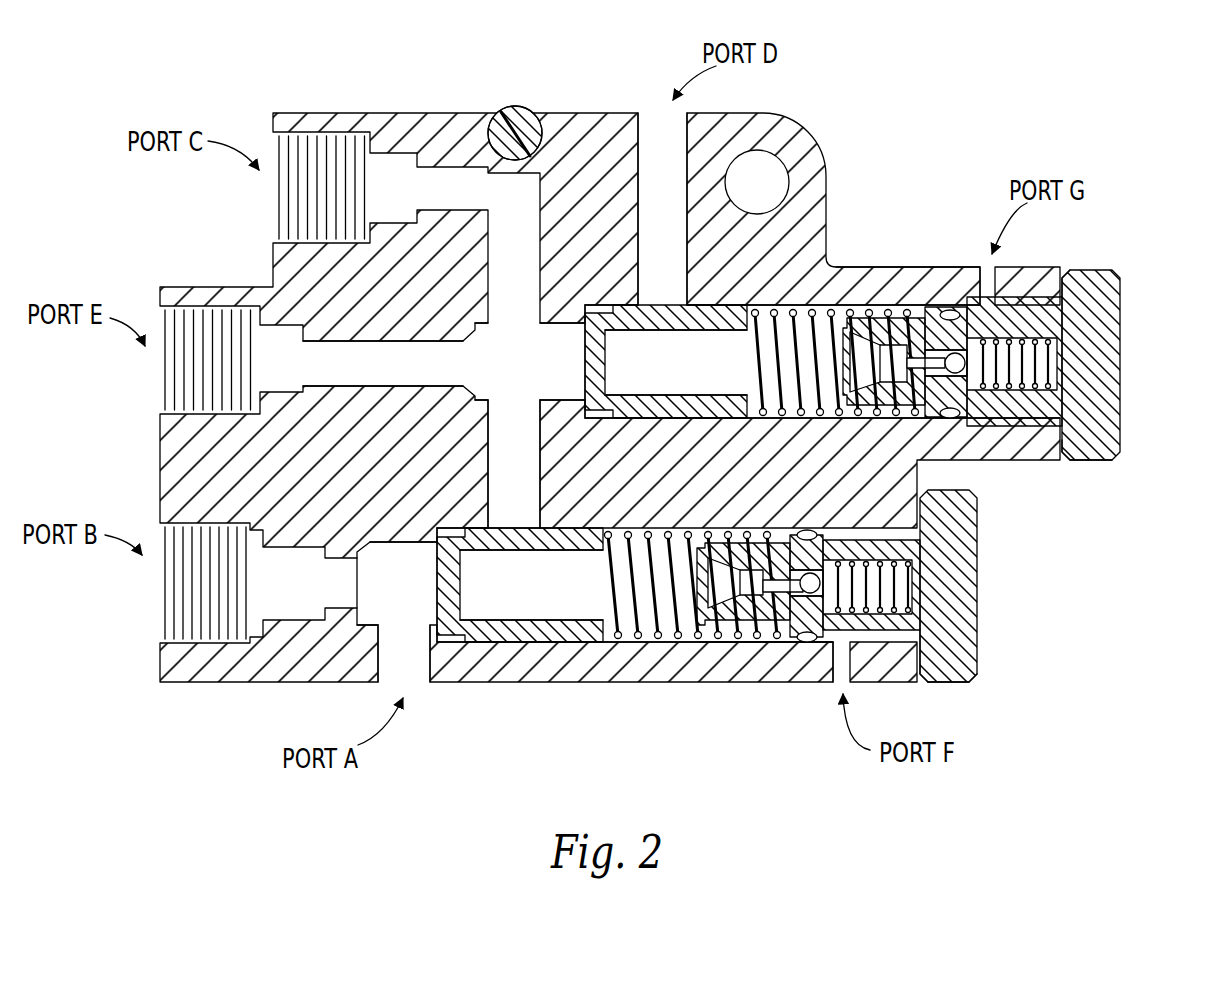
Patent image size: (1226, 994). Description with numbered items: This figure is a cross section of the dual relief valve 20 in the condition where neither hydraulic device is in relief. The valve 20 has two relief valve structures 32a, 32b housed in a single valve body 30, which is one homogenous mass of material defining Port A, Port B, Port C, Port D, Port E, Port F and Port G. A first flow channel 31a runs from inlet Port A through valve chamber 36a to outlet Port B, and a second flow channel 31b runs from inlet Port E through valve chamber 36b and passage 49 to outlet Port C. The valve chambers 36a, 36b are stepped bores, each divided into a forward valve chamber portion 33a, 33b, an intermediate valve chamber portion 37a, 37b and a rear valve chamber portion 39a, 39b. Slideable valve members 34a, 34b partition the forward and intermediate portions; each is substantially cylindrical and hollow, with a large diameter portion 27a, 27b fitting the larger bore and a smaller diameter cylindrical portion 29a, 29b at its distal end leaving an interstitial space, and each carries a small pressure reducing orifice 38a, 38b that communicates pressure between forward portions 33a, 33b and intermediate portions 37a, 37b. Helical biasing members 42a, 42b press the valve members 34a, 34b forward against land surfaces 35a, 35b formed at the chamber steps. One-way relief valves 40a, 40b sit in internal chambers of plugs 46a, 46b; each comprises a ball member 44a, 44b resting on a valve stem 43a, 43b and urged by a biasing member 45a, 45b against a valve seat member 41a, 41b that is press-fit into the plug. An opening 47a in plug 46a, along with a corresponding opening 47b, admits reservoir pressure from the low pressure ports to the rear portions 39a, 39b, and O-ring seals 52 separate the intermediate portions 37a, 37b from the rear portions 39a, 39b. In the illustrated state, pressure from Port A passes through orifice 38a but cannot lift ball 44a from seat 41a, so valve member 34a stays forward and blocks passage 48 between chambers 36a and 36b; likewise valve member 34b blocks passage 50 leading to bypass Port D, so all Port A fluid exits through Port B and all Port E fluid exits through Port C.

The valve 20 is at (335, 66).
The large diameter portion 27a is at (520, 650).
The large diameter portion 27b is at (778, 277).
The smaller diameter cylindrical portion 29a is at (445, 637).
The smaller diameter cylindrical portion 29b is at (603, 303).
The valve body 30 is at (285, 270).
The first flow channel 31a is at (288, 597).
The second flow channel 31b is at (457, 178).
The relief valve structure 32a is at (766, 674).
The relief valve structure 32b is at (886, 284).
The forward valve chamber portion 33a is at (412, 605).
The forward valve chamber portion 33b is at (550, 353).
The slideable valve member 34a is at (563, 524).
The slideable valve member 34b is at (683, 421).
The land surface 35a is at (450, 640).
The land surface 35b is at (607, 397).
The valve chamber 36a is at (393, 555).
The valve chamber 36b is at (490, 348).
The intermediate valve chamber portion 37a is at (645, 640).
The intermediate valve chamber portion 37b is at (787, 307).
The pressure reducing orifice 38a is at (470, 592).
The pressure reducing orifice 38b is at (577, 355).
The rear valve chamber portion 39a is at (912, 660).
The rear valve chamber portion 39b is at (975, 320).
The one-way relief valve 40a is at (880, 562).
The one-way relief valve 40b is at (1050, 397).
The valve seat member 41a is at (795, 645).
The valve seat member 41b is at (928, 320).
The biasing member 42a is at (707, 543).
The biasing member 42b is at (845, 328).
The valve stem 43a is at (975, 680).
The valve stem 43b is at (1070, 455).
The ball member 44a is at (812, 572).
The ball member 44b is at (955, 352).
The biasing member 45a is at (960, 550).
The biasing member 45b is at (1050, 330).
The plug 46a is at (960, 637).
The plug 46b is at (1100, 358).
The opening 47a is at (860, 672).
The plug flange 47b is at (1062, 272).
The passage 48 is at (493, 473).
The passage 49 is at (553, 112).
The passage 50 is at (658, 192).
The O-ring seal 52 is at (955, 420).